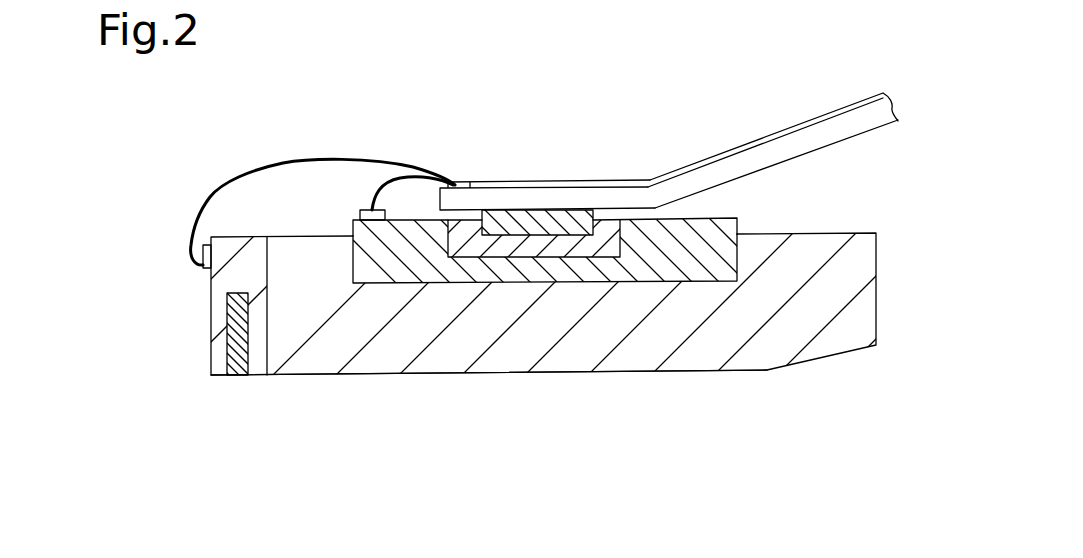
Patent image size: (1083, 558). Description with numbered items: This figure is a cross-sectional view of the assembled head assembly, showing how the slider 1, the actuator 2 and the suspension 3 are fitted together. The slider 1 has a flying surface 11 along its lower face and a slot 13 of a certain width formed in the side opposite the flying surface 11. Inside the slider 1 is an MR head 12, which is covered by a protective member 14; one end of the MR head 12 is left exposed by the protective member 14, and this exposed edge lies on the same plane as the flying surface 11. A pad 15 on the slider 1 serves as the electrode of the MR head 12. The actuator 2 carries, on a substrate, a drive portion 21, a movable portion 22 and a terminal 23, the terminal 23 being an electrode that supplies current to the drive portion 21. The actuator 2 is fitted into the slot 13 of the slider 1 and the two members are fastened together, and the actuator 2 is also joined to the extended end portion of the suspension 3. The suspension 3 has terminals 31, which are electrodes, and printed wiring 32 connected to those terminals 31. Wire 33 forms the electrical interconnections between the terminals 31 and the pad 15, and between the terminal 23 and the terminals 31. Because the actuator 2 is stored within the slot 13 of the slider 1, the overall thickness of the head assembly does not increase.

The slider 1 is at (530, 338).
The flying surface 11 is at (323, 377).
The MR head 12 is at (240, 336).
The slot 13 is at (603, 277).
The protective member 14 is at (255, 335).
The pad 15 is at (203, 264).
The actuator 2 is at (712, 218).
The drive portion 21 is at (607, 232).
The movable portion 22 is at (522, 222).
The terminal 23 is at (362, 209).
The suspension 3 is at (670, 116).
The terminals 31 is at (471, 181).
The printed wiring 32 is at (703, 150).
The wire 33 is at (257, 170).